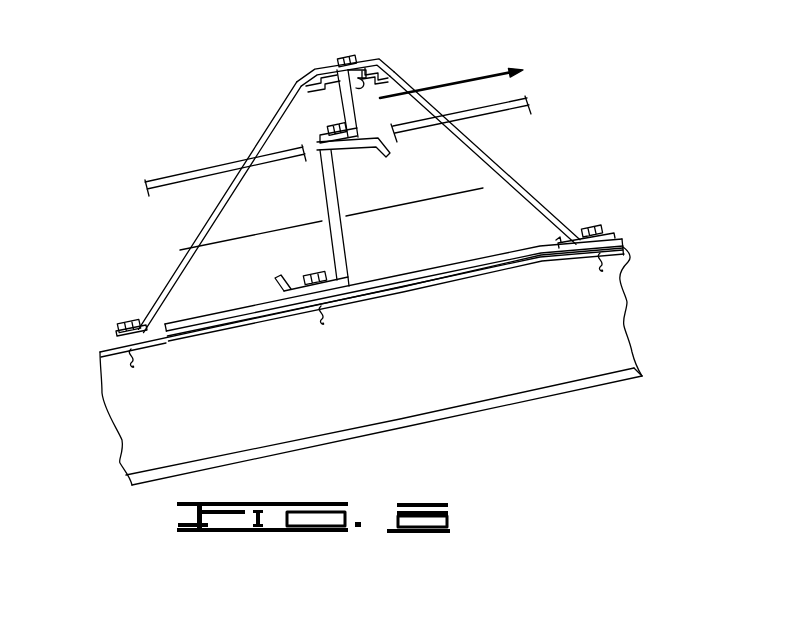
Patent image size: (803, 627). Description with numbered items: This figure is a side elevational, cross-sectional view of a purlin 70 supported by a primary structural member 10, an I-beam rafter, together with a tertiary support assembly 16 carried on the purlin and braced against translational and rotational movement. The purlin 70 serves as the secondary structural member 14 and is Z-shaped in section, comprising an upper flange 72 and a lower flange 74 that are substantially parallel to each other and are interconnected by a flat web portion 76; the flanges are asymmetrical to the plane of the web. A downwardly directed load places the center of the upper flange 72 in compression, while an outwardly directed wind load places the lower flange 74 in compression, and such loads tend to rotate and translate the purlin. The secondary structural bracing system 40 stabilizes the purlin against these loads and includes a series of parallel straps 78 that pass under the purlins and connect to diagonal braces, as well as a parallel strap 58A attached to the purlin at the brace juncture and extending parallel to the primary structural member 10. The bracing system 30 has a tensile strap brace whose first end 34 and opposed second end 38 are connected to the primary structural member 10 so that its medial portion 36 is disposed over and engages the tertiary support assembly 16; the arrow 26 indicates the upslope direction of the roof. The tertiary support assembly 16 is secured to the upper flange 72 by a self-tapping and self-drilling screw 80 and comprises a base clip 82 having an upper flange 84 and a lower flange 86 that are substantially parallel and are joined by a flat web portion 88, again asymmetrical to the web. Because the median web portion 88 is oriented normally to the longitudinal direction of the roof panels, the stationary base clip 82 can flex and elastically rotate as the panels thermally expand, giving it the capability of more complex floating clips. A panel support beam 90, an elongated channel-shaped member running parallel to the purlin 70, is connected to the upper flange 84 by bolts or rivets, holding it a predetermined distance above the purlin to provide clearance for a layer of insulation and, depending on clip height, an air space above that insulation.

The primary structural member 10 is at (388, 382).
The secondary structural member 14 is at (327, 199).
The tertiary support assembly 16 is at (375, 88).
The arrow indicating upslope direction 26 is at (452, 82).
The bracing system 30 is at (543, 192).
The first end 34 is at (118, 331).
The medial portion 36 is at (374, 62).
The second end 38 is at (606, 231).
The secondary structural bracing system 40 is at (552, 87).
The parallel strap 58A is at (453, 263).
The purlin 70 is at (352, 257).
The upper flange 72 is at (366, 157).
The lower flange 74 is at (333, 280).
The web portion 76 is at (345, 224).
The parallel strap 78 is at (218, 164).
The self-tapping and self-drilling screw 80 is at (330, 127).
The base clip 82 is at (355, 118).
The upper flange 84 is at (357, 58).
The lower flange 86 is at (323, 145).
The web portion 88 is at (347, 110).
The panel support beam 90 is at (338, 70).